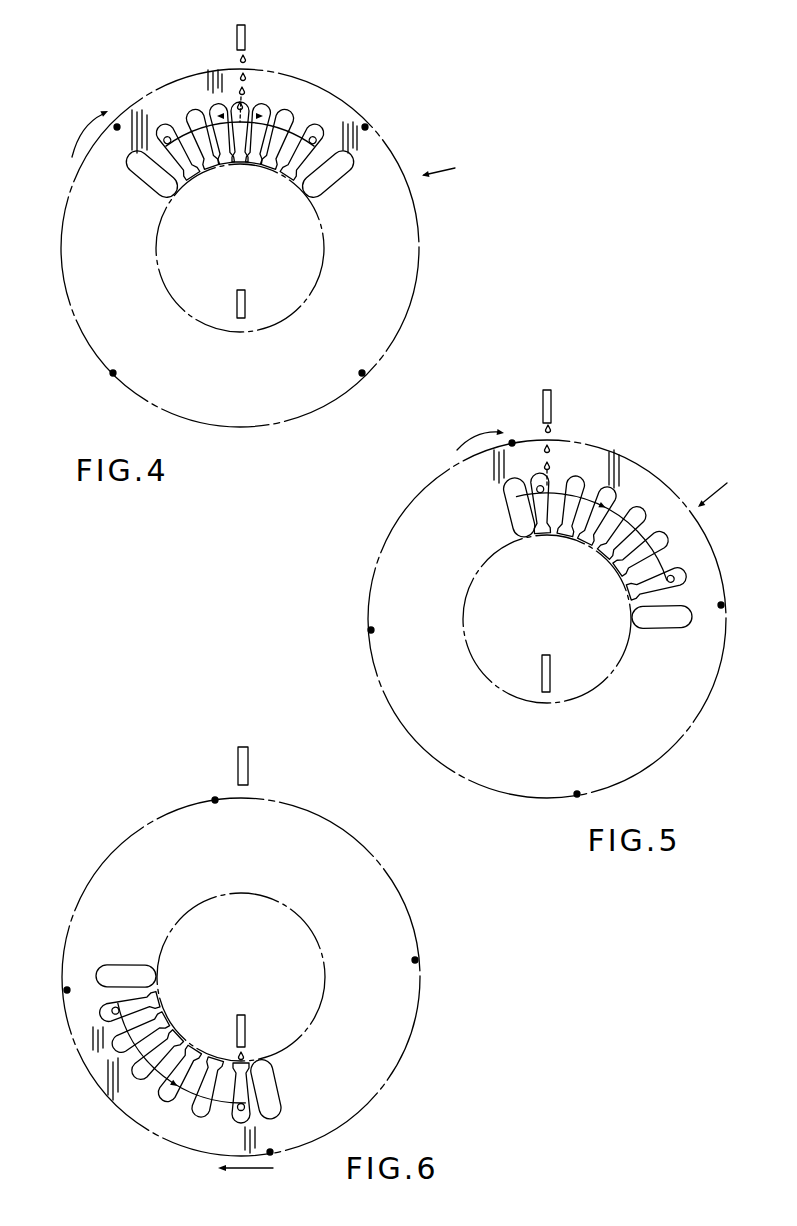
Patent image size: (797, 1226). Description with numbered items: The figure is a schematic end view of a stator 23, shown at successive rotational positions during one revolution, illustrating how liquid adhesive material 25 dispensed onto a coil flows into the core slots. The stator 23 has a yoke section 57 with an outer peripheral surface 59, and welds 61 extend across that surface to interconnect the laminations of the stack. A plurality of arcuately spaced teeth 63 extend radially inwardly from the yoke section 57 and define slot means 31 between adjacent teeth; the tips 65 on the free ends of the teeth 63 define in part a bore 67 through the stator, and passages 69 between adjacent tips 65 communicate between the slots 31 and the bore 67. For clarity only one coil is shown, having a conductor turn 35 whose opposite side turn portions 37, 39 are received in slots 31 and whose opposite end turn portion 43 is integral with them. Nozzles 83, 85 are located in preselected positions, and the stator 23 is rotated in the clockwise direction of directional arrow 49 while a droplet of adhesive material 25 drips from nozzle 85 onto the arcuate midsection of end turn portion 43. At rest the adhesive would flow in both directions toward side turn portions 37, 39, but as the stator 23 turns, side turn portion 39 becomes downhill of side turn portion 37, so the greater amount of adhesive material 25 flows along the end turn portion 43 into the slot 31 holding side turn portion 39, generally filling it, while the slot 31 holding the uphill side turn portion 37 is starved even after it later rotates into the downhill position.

In FIG. 4, the stator 23 is at (471, 180).
In FIG. 5, the stator 23 is at (728, 487).
In FIG. 6, the stator 23 is at (481, 1007).
In FIG. 4, the liquid adhesive material 25 is at (245, 58).
In FIG. 5, the liquid adhesive material 25 is at (550, 430).
In FIG. 6, the liquid adhesive material 25 is at (245, 1056).
In FIG. 4, the slot means 31 is at (123, 168).
In FIG. 5, the slot means 31 is at (510, 497).
In FIG. 6, the slot means 31 is at (104, 956).
In FIG. 4, the conductor turn 35 is at (278, 124).
In FIG. 5, the conductor turn 35 is at (612, 508).
In FIG. 6, the conductor turn 35 is at (150, 1068).
In FIG. 4, the opposite side turn portion 37 is at (164, 137).
In FIG. 5, the opposite side turn portion 37 is at (544, 486).
In FIG. 6, the opposite side turn portion 37 is at (240, 1110).
In FIG. 4, the opposite side turn portion 39 is at (316, 139).
In FIG. 5, the opposite side turn portion 39 is at (674, 578).
In FIG. 6, the opposite side turn portion 39 is at (112, 1012).
In FIG. 4, the opposite end turn portion 43 is at (297, 133).
In FIG. 5, the opposite end turn portion 43 is at (640, 515).
In FIG. 6, the opposite end turn portion 43 is at (165, 1095).
In FIG. 4, the directional arrow 49 is at (78, 118).
In FIG. 5, the directional arrow 49 is at (468, 432).
In FIG. 6, the directional arrow 49 is at (258, 1168).
In FIG. 4, the yoke section 57 is at (183, 95).
In FIG. 4, the outer peripheral surface 59 is at (91, 345).
In FIG. 5, the outer peripheral surface 59 is at (369, 597).
In FIG. 6, the outer peripheral surface 59 is at (392, 882).
In FIG. 4, the welds 61 is at (116, 124).
In FIG. 5, the welds 61 is at (512, 440).
In FIG. 6, the welds 61 is at (215, 798).
In FIG. 4, the teeth 63 is at (289, 178).
In FIG. 5, the teeth 63 is at (627, 594).
In FIG. 6, the teeth 63 is at (237, 1060).
In FIG. 4, the tips 65 is at (253, 166).
In FIG. 5, the tips 65 is at (601, 556).
In FIG. 6, the tips 65 is at (180, 1033).
In FIG. 4, the bore 67 is at (168, 292).
In FIG. 5, the bore 67 is at (478, 664).
In FIG. 6, the bore 67 is at (308, 922).
In FIG. 4, the passages 69 is at (212, 170).
In FIG. 5, the passages 69 is at (545, 540).
In FIG. 6, the passages 69 is at (160, 997).
In FIG. 4, the nozzle 83 is at (246, 306).
In FIG. 5, the nozzle 83 is at (551, 672).
In FIG. 6, the nozzle 83 is at (246, 1020).
In FIG. 4, the nozzle 85 is at (237, 40).
In FIG. 5, the nozzle 85 is at (543, 403).
In FIG. 6, the nozzle 85 is at (249, 762).